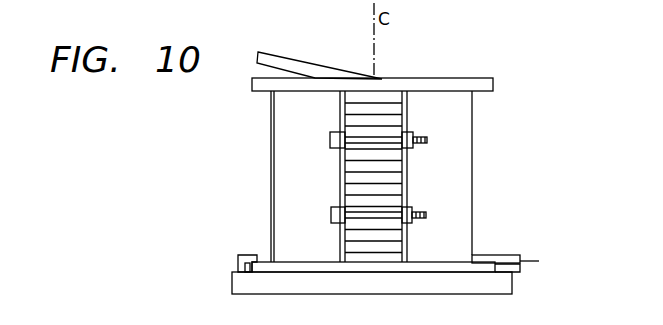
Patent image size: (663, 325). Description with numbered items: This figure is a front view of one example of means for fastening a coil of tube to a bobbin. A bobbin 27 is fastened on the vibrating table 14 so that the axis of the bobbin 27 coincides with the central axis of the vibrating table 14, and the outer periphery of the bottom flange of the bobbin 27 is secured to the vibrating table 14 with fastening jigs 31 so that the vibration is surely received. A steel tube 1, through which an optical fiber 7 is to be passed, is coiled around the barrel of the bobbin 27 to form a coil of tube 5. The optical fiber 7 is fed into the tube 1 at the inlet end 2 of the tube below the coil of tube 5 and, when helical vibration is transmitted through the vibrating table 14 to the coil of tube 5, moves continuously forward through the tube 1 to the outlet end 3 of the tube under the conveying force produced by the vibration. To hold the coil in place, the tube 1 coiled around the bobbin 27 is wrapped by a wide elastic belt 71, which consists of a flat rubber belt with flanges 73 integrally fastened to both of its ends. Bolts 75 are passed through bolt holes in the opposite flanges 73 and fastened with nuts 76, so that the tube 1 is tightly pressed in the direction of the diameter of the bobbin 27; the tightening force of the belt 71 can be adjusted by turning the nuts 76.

The tube 1 is at (393, 155).
The inlet end of the tube 2 is at (518, 254).
The outlet end of the tube 3 is at (273, 53).
The coil of tube 5 is at (476, 180).
The optical fiber 7 is at (534, 262).
The vibrating table 14 is at (232, 280).
The bobbin 27 is at (462, 79).
The fastening jigs 31 is at (238, 254).
The elastic belt 71 is at (459, 107).
The flanges 73 is at (346, 241).
The bolts 75 is at (330, 137).
The nuts 76 is at (411, 131).